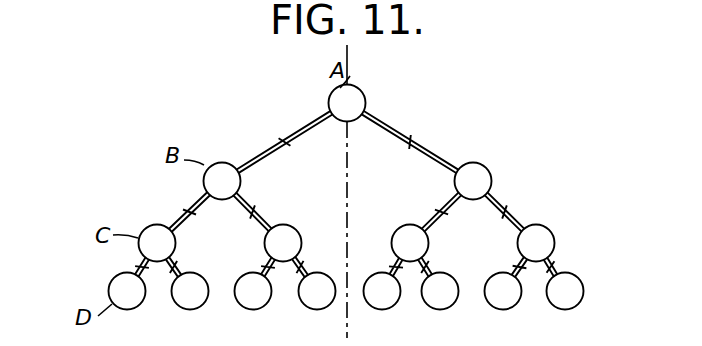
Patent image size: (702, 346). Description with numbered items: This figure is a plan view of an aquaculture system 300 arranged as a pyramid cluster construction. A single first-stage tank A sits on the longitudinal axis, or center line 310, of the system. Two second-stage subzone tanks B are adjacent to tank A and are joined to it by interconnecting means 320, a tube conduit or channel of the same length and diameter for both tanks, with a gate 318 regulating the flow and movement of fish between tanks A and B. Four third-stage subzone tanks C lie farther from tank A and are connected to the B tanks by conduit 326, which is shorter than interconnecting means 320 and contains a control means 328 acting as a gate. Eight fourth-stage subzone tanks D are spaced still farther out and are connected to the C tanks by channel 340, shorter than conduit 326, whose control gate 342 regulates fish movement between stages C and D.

The tree-structured network 300 is at (447, 110).
The center line 310 is at (347, 70).
The gate 318 is at (283, 142).
The interconnecting means 320 is at (313, 121).
The conduit 326 is at (197, 197).
The control means 328 is at (186, 209).
The channel 340 is at (138, 264).
The control gate 342 is at (131, 269).